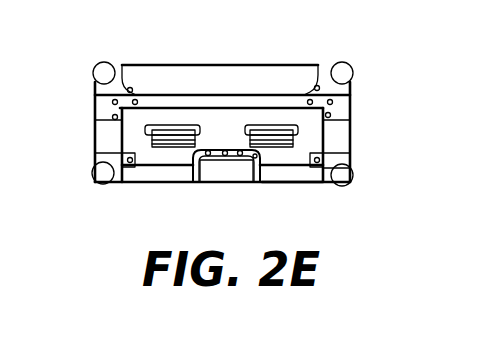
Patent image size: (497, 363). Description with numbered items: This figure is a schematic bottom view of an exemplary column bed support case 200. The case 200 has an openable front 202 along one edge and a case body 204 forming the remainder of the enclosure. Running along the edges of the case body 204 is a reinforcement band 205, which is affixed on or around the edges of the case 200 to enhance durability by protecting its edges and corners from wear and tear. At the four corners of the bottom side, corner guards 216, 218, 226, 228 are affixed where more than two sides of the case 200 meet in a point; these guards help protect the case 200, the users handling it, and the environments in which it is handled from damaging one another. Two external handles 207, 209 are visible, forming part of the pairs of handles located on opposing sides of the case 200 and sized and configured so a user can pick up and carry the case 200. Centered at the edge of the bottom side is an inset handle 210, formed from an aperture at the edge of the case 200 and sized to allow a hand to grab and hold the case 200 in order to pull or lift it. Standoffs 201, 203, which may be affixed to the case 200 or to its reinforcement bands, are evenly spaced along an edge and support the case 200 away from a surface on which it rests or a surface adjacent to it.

The column bed support case 200 is at (353, 63).
The standoff 201 is at (162, 184).
The openable front 202 is at (185, 66).
The standoff 203 is at (285, 184).
The case body 204 is at (293, 173).
The reinforcement band 205 is at (252, 82).
The external handle 207 is at (152, 137).
The external handle 209 is at (298, 138).
The inset handle 210 is at (225, 167).
The corner guard 216 is at (353, 180).
The corner guard 218 is at (342, 73).
The corner guard 226 is at (96, 70).
The corner guard 228 is at (93, 177).